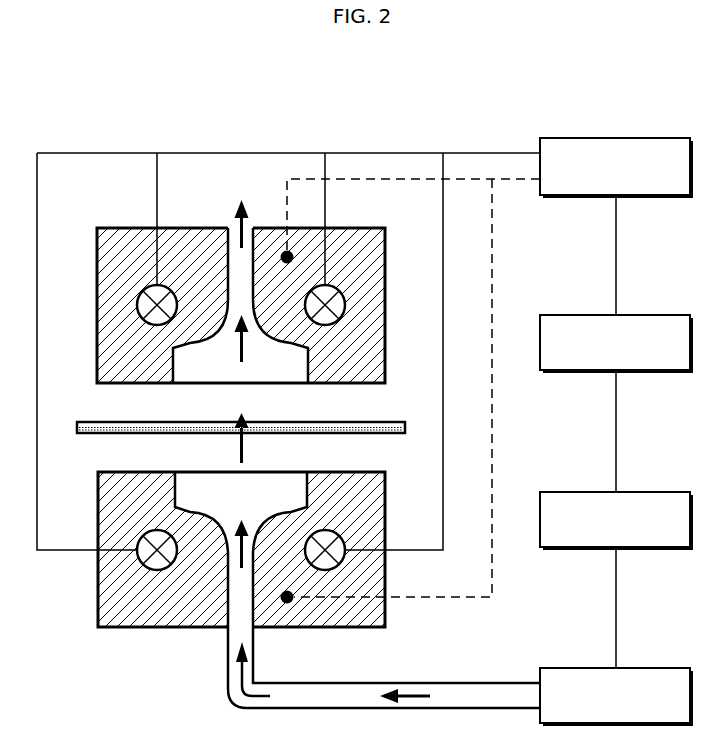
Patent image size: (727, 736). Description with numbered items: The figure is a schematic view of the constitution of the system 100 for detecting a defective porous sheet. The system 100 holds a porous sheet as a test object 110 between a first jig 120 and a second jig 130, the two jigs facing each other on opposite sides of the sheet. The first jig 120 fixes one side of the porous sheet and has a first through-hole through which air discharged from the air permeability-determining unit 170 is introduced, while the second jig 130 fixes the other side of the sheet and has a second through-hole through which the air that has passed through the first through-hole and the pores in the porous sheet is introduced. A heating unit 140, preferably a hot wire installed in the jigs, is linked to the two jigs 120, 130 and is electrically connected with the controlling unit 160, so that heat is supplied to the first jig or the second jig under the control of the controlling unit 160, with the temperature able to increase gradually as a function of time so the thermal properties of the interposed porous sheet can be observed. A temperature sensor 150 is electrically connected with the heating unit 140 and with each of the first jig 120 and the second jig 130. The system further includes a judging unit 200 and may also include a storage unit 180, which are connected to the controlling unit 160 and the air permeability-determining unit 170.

The system for detecting a defective porous sheet 100 is at (132, 88).
The test object 110 is at (125, 422).
The first jig 120 is at (130, 472).
The second jig 130 is at (148, 228).
The heating unit 140 is at (137, 305).
The temperature sensor 150 is at (292, 250).
The controlling unit 160 is at (663, 138).
The air permeability-determining unit 170 is at (663, 668).
The storage unit 180 is at (663, 492).
The judging unit 200 is at (663, 315).